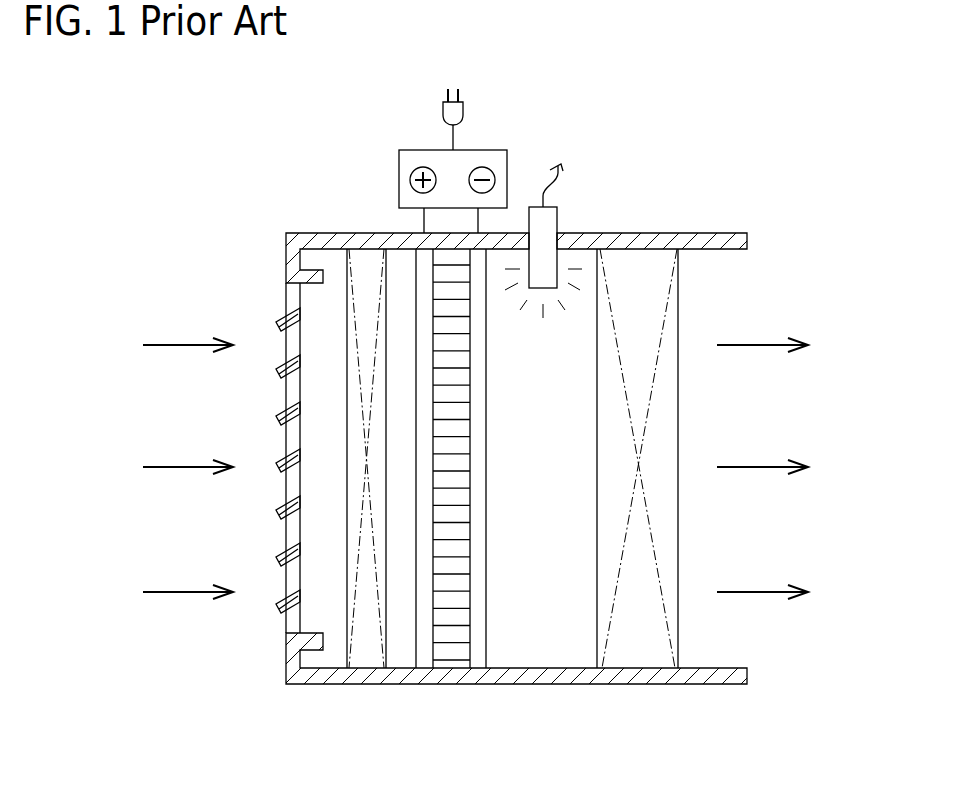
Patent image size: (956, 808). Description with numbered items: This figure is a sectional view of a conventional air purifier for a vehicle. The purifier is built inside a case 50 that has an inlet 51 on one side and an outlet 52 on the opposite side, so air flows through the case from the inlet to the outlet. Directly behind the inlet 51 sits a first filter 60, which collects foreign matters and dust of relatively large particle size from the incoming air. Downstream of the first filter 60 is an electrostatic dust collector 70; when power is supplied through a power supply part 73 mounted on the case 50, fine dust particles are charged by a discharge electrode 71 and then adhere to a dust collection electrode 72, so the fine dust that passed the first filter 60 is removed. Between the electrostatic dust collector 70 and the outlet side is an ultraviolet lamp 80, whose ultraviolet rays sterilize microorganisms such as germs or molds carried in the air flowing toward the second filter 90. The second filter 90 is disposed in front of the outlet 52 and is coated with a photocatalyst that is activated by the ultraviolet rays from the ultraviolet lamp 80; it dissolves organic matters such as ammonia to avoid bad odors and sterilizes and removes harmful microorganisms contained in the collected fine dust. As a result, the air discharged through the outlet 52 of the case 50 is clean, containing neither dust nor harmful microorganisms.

The case 50 is at (336, 688).
The inlet 51 is at (292, 437).
The outlet 52 is at (740, 540).
The first filter 60 is at (358, 297).
The electrostatic dust collector 70 is at (486, 499).
The discharge electrode 71 is at (424, 660).
The dust collection electrode 72 is at (490, 595).
The power supply part 73 is at (413, 152).
The ultraviolet lamp 80 is at (553, 217).
The second filter 90 is at (636, 655).